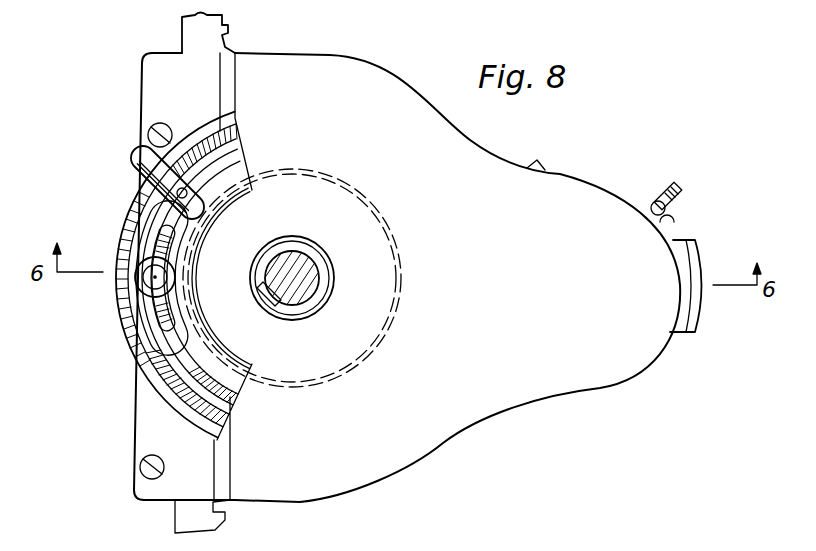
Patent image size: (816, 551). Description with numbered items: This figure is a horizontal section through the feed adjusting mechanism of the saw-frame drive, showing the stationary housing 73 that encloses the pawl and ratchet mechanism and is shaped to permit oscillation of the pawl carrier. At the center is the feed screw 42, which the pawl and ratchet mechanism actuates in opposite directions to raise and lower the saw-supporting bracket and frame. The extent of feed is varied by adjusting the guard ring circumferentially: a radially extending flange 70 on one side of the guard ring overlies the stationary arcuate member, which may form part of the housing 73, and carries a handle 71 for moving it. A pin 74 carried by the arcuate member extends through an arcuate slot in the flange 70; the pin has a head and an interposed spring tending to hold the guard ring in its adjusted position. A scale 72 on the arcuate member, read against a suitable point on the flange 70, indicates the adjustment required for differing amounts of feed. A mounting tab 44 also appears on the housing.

The mounting tab 44 is at (227, 35).
The stationary housing 73 is at (342, 75).
The handle 71 is at (143, 157).
The radially extending flange 70 is at (128, 225).
The pin 74 is at (150, 272).
The scale 72 is at (117, 300).
The feed screw 42 is at (302, 268).